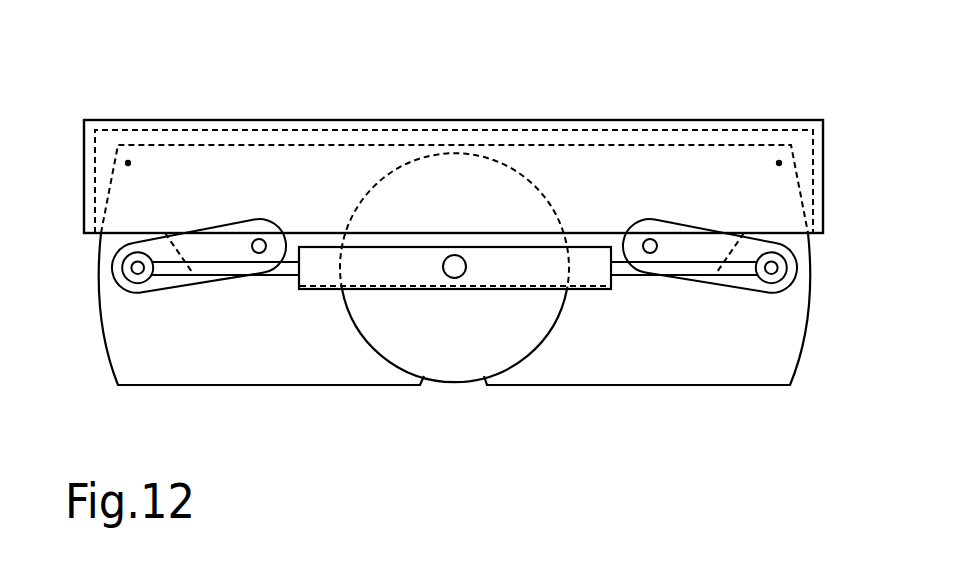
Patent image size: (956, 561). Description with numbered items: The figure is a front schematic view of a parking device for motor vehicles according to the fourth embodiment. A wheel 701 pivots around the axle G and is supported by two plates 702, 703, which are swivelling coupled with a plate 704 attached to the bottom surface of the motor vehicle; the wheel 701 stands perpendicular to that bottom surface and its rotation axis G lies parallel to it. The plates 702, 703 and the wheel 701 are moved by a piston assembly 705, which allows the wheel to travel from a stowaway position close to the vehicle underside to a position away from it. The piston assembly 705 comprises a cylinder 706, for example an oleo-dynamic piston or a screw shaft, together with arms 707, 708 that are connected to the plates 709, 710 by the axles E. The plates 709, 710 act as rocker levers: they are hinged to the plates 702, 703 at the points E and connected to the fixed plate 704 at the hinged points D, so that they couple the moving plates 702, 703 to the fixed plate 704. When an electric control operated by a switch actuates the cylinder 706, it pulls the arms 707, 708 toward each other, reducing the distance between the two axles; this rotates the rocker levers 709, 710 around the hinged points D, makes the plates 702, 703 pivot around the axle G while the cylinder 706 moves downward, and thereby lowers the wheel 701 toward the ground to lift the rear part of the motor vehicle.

The wheel 701 is at (457, 368).
The plate 702 is at (250, 368).
The plate 703 is at (745, 370).
The plate 704 is at (246, 138).
The piston assembly 705 is at (608, 304).
The cylinder 706 is at (333, 289).
The arm 707 is at (279, 263).
The arm 708 is at (628, 267).
The rocker lever 709 is at (205, 247).
The rocker lever 710 is at (692, 237).
The hinged point D is at (262, 238).
The axle E is at (138, 268).
The axle G is at (457, 255).